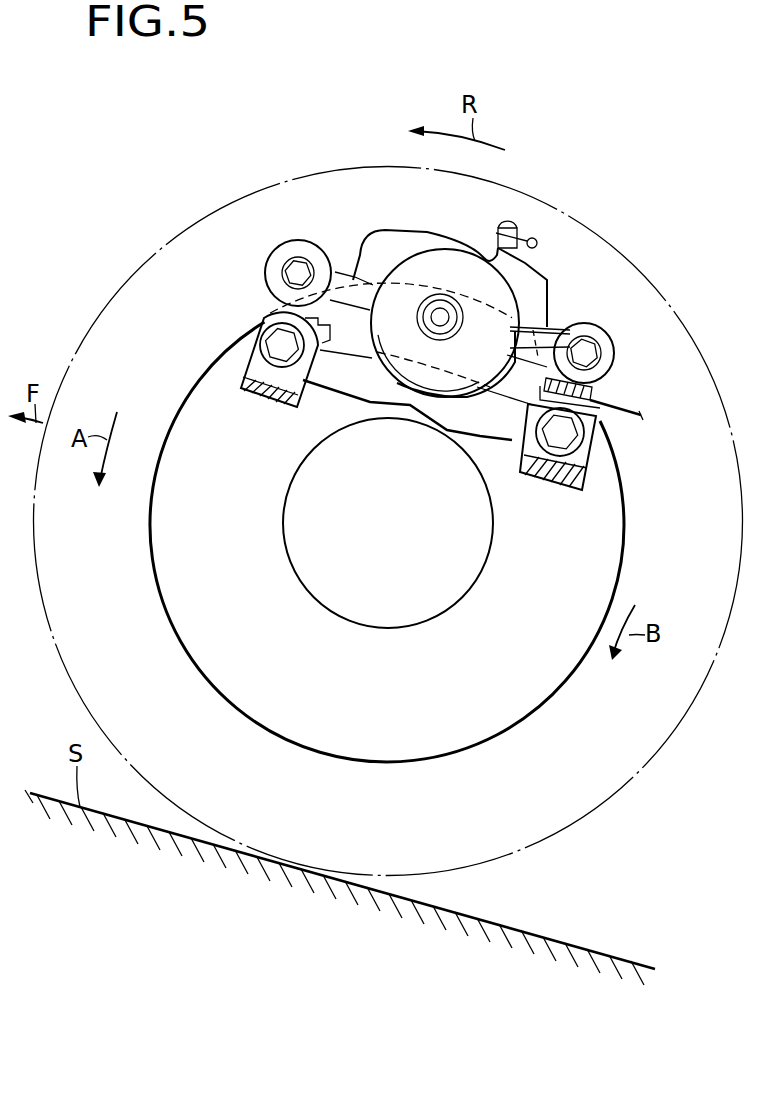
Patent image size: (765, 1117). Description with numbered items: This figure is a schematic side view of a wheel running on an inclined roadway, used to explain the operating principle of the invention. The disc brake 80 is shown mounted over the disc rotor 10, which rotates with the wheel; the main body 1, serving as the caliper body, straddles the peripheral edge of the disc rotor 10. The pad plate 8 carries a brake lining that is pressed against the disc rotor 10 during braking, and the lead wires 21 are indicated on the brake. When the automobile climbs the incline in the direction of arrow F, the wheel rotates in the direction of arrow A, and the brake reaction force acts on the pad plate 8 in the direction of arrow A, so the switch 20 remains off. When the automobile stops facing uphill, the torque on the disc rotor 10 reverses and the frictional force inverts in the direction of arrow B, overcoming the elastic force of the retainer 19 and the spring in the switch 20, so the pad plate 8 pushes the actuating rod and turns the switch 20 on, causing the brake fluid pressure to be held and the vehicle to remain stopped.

The main body 1 is at (428, 228).
The pad plate 8 is at (507, 378).
The disc rotor 10 is at (598, 492).
The retainer 19 is at (555, 357).
The switch 20 is at (603, 371).
The lead wires 21 is at (612, 403).
The disc brake 80 is at (343, 235).